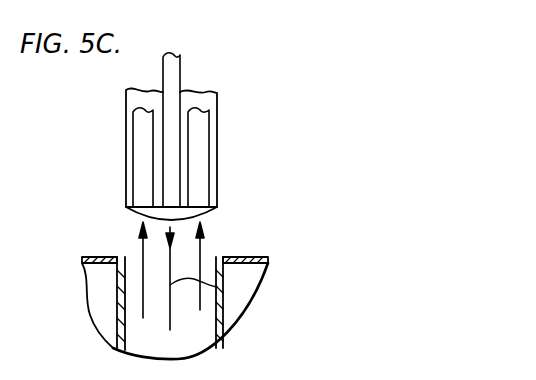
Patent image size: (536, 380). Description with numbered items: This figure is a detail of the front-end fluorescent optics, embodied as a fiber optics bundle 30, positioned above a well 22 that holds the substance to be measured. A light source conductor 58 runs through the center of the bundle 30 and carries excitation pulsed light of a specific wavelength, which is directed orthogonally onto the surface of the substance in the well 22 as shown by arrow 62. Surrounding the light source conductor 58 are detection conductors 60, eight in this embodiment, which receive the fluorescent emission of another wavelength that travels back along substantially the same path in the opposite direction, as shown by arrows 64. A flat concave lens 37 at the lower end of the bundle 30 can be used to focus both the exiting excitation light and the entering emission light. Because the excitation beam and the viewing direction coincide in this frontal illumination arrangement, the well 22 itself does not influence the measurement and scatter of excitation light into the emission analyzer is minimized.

The light source conductor 58 is at (178, 70).
The fiber optics bundle 30 is at (218, 115).
The detection conductors 60 is at (142, 163).
The flat concave lens 37 is at (205, 217).
The arrows showing fluorescent emission direction 64 is at (132, 250).
The arrow showing excitation light direction 62 is at (217, 287).
The well 22 is at (200, 319).